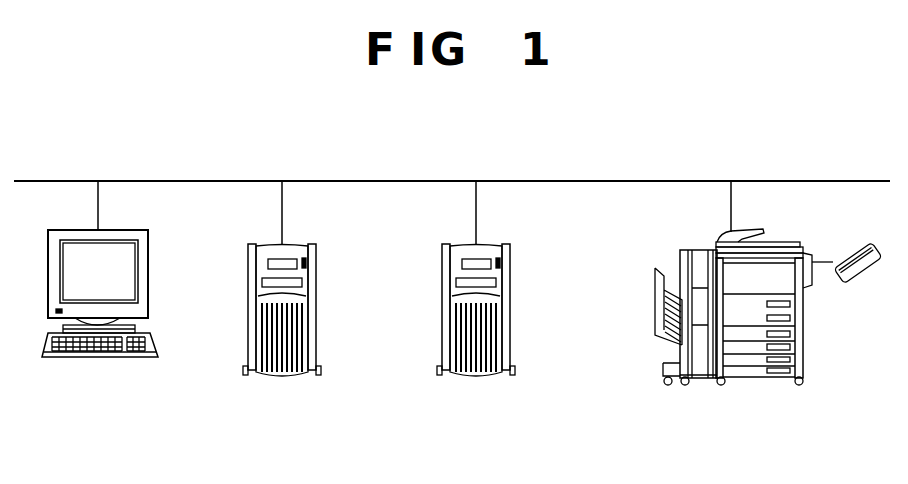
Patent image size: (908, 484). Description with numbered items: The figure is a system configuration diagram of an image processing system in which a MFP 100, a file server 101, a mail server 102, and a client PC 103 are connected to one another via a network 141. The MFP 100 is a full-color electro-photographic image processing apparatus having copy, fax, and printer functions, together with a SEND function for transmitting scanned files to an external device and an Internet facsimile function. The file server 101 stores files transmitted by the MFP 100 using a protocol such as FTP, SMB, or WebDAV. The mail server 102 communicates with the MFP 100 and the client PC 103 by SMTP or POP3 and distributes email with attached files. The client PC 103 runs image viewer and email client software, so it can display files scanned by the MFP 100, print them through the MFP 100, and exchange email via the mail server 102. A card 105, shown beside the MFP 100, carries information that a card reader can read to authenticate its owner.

The MFP 100 is at (785, 380).
The file server 101 is at (510, 256).
The mail server 102 is at (316, 256).
The client PC 103 is at (148, 238).
The card 105 is at (868, 283).
The network 141 is at (832, 181).